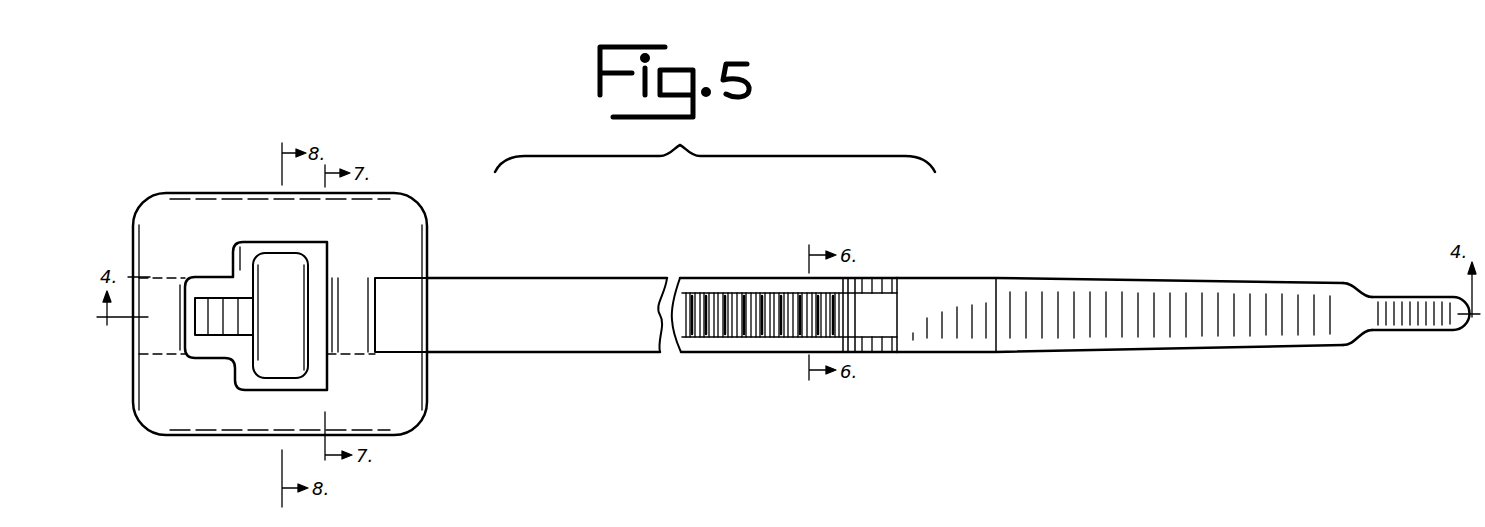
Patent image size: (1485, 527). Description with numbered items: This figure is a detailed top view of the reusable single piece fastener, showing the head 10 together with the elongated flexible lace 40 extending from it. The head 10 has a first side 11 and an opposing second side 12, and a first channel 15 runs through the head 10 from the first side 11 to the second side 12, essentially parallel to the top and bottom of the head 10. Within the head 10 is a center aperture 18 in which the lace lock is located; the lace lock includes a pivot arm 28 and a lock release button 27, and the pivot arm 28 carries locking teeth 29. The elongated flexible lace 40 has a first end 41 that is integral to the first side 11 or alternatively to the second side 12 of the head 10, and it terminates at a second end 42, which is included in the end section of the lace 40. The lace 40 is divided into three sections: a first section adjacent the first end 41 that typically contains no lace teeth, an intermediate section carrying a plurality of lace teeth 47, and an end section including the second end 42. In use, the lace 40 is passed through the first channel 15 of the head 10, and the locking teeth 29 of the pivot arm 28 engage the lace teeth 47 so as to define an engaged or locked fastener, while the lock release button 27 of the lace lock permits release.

The head 10 is at (428, 418).
The first side 11 is at (430, 383).
The second side 12 is at (134, 393).
The first channel 15 is at (163, 350).
The center aperture 18 is at (244, 378).
The lock release button 27 is at (273, 357).
The pivot arm 28 is at (247, 327).
The locking teeth 29 is at (195, 323).
The elongated flexible lace 40 is at (1057, 352).
The first end 41 is at (435, 283).
The second end 42 is at (1448, 331).
The lace teeth 47 is at (788, 282).